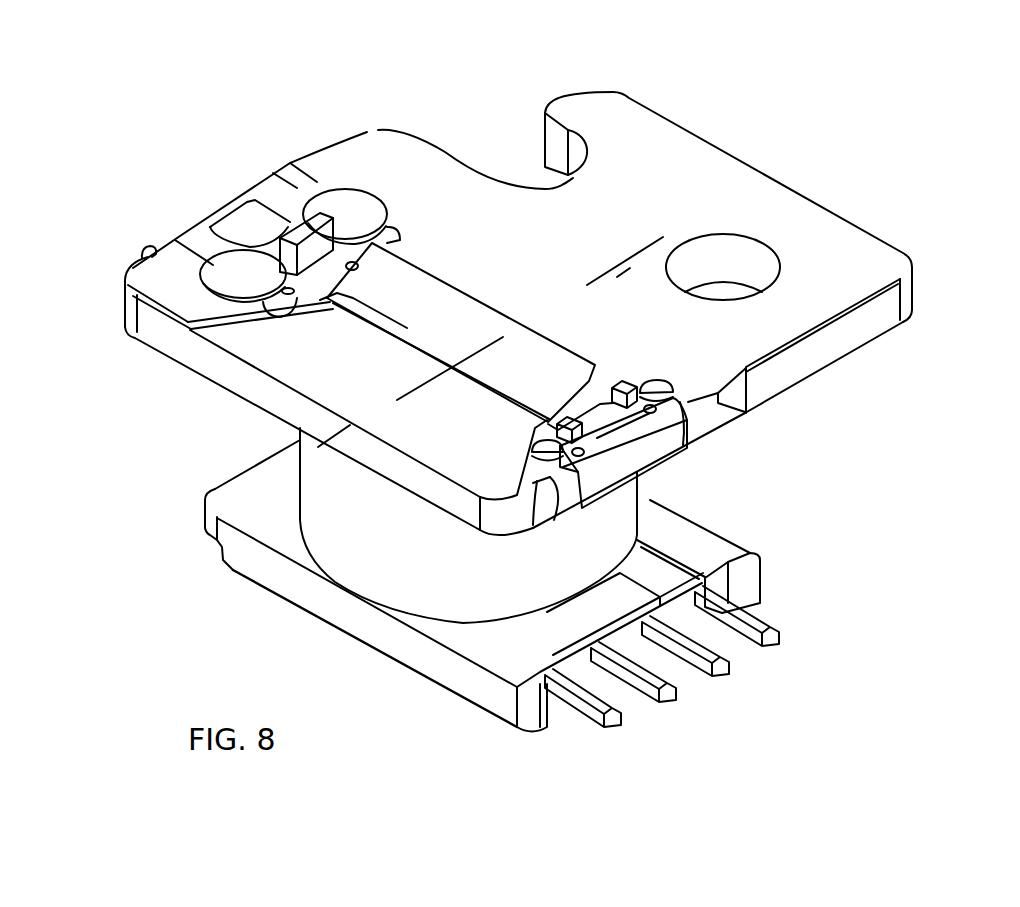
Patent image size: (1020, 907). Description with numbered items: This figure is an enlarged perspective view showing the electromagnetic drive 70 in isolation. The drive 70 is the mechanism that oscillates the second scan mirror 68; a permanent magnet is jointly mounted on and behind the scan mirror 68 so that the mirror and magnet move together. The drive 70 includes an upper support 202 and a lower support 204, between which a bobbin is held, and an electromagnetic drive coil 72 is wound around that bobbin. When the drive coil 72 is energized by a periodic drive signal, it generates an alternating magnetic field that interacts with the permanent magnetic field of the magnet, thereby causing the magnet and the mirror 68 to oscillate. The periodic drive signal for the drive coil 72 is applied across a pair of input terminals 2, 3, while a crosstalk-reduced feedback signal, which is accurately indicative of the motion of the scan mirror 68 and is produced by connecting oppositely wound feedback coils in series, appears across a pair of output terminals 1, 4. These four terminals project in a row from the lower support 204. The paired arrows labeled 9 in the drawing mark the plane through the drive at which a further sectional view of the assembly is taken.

The output terminal 1 is at (604, 722).
The input terminal 2 is at (667, 690).
The input terminal 3 is at (713, 663).
The output terminal 4 is at (762, 640).
The section line 9- 9 is at (347, 432).
The second scan mirror 68 is at (410, 300).
The electromagnetic drive 70 is at (539, 476).
The electromagnetic drive coil 72 is at (363, 557).
The upper support 202 is at (840, 223).
The lower support 204 is at (470, 690).